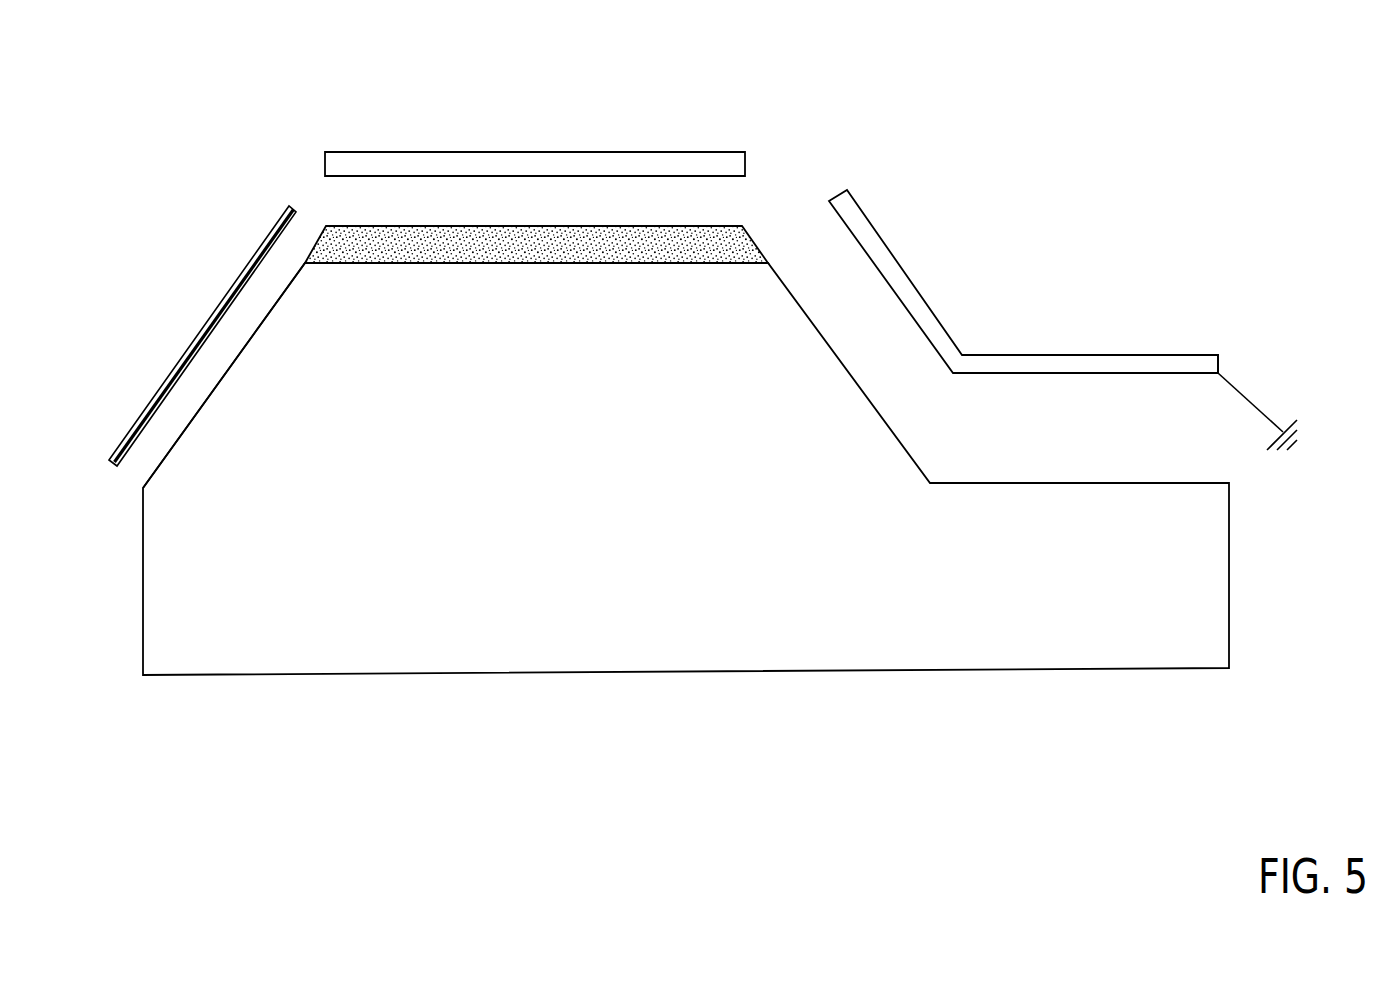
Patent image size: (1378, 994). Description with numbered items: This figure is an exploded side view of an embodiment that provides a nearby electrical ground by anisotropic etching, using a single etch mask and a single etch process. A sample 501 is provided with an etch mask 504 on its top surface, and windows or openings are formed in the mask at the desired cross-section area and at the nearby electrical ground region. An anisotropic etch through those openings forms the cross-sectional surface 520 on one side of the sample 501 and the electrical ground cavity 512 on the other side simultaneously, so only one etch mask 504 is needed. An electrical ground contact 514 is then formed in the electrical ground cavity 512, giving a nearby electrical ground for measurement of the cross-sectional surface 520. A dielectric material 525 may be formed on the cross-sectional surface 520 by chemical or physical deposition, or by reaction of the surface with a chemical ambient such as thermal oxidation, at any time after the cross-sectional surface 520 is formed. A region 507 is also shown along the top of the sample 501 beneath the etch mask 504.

The sample 501 is at (588, 541).
The etch mask 504 is at (538, 160).
The doped/implanted region 507 is at (355, 243).
The electrical ground cavity 512 is at (800, 208).
The electrical ground contact 514 is at (1053, 365).
The cross-sectional surface 520 is at (170, 448).
The dielectric material 525 is at (222, 297).